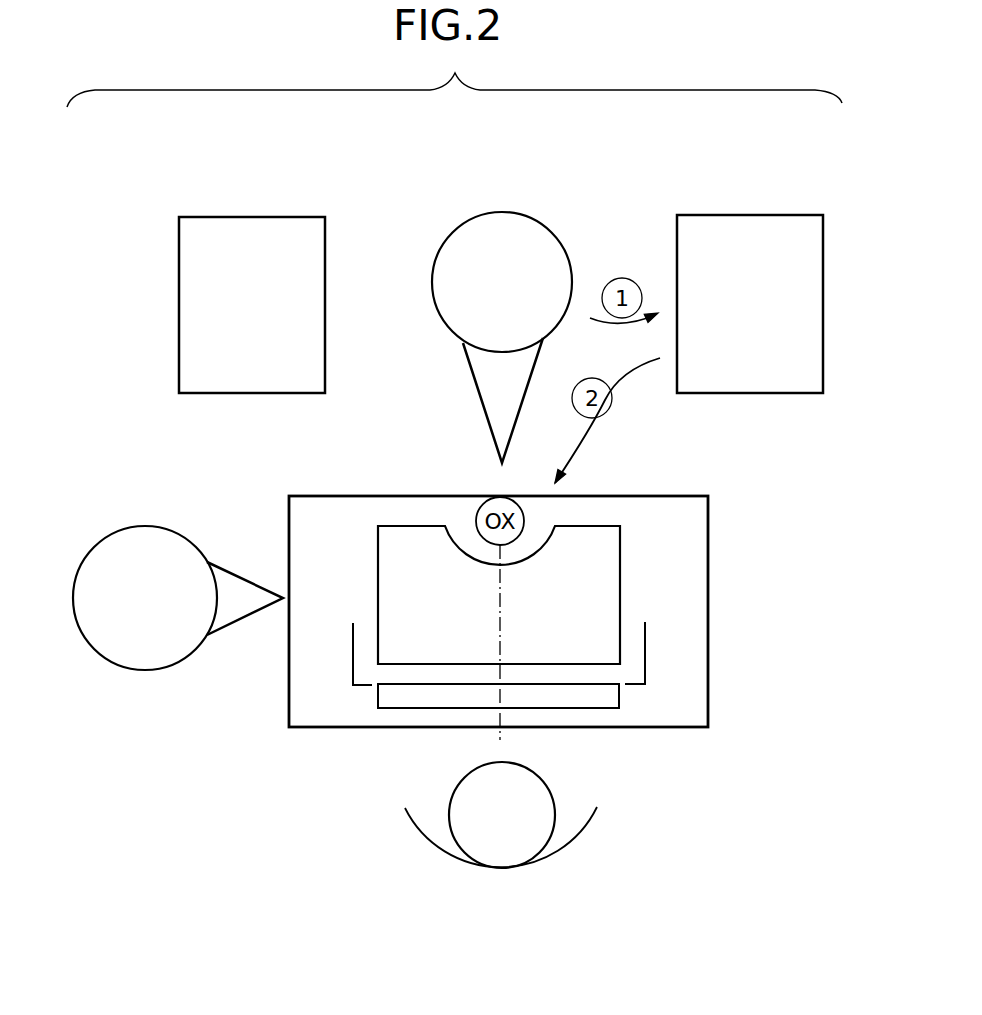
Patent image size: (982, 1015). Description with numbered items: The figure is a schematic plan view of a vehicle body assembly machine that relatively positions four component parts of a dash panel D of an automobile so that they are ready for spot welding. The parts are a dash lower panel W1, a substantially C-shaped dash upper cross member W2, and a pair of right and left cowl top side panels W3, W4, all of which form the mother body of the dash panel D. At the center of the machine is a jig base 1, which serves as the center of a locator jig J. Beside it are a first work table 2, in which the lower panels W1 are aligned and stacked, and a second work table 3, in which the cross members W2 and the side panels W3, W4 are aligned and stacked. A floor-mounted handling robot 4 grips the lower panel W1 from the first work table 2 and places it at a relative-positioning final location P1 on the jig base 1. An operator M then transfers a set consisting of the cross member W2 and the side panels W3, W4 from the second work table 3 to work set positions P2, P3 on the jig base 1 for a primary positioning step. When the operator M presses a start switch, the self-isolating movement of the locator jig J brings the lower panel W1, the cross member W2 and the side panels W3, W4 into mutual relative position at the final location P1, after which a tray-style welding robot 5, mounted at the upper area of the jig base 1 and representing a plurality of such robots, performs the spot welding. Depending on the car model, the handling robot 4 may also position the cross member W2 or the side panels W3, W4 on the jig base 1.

The jig base 1 is at (315, 730).
The first work table 2 is at (752, 215).
The second work table 3 is at (245, 217).
The handling robot 4 is at (500, 213).
The welding robot 5 is at (140, 527).
The dash lower panel W1 is at (602, 542).
The dash upper cross member W2 is at (593, 710).
The cowl top side panel W3 is at (353, 660).
The cowl top side panel W4 is at (645, 640).
The relative-positioning final location P1 is at (627, 552).
The work set position P2 is at (610, 710).
The work set position P3 is at (653, 627).
The dash panel D is at (632, 593).
The locator jig J is at (375, 745).
The operator M is at (435, 848).